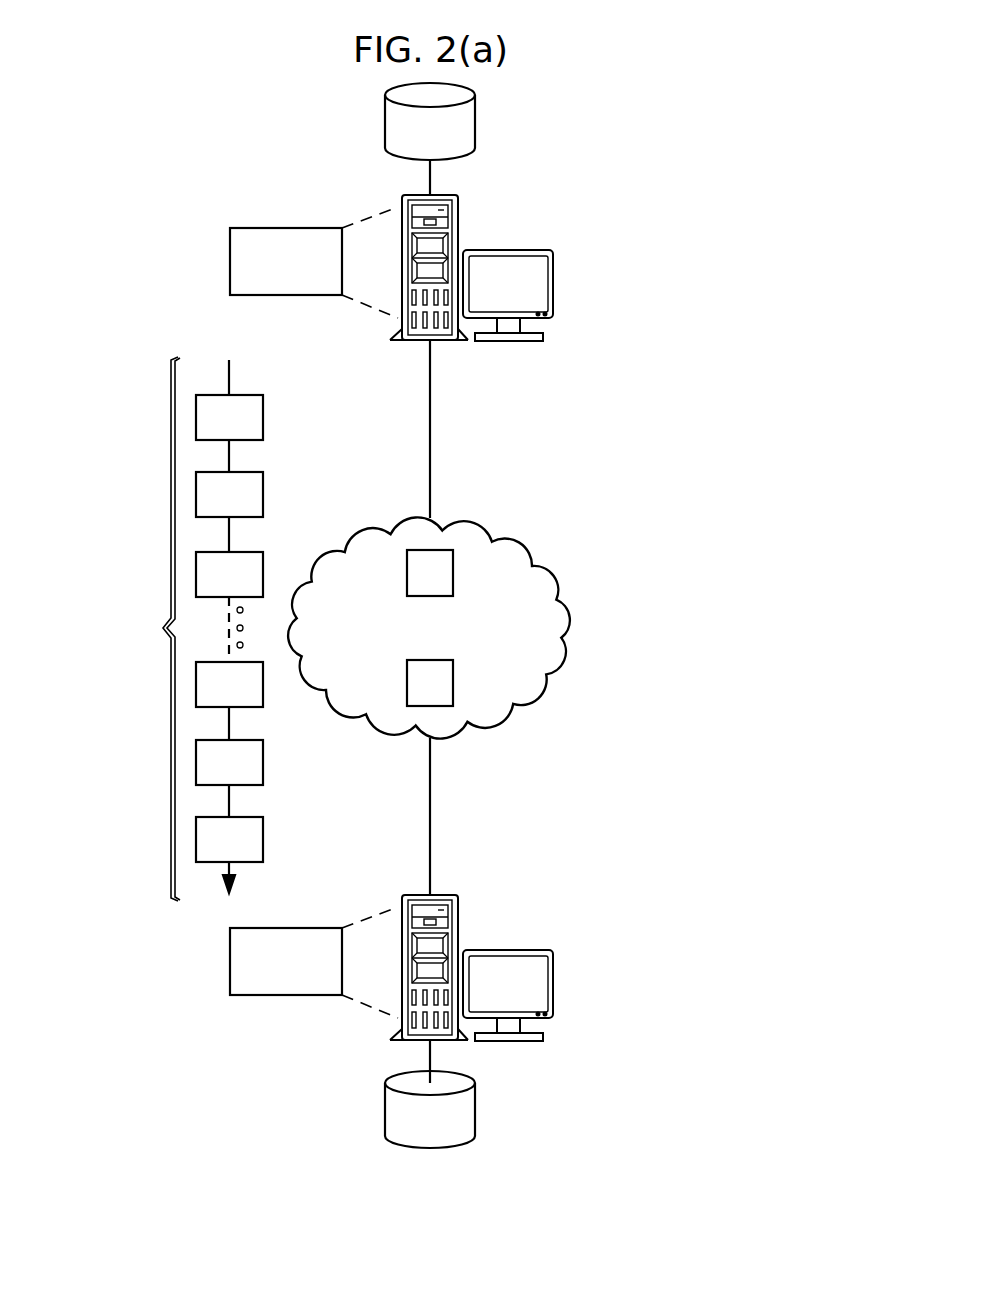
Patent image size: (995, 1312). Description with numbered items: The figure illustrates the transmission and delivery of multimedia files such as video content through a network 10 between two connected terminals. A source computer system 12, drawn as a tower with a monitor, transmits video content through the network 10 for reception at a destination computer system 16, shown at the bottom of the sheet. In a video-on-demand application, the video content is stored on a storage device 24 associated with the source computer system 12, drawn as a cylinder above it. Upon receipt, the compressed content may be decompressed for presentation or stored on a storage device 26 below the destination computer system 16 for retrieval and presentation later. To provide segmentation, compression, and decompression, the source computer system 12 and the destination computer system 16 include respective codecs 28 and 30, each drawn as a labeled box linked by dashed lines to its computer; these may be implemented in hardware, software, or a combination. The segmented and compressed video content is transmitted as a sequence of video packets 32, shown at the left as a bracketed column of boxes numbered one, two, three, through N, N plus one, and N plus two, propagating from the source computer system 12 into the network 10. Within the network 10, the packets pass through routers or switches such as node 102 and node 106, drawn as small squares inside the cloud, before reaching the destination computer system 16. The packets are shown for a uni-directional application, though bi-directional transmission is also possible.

The network 10 is at (540, 532).
The source computer system 12 is at (555, 283).
The destination computer system 16 is at (553, 985).
The storage device 24 is at (385, 128).
The storage device 26 is at (385, 1112).
The codec 28 is at (230, 262).
The codec 30 is at (230, 960).
The sequence of video packets 32 is at (163, 628).
The node 102 is at (407, 572).
The node 106 is at (407, 682).